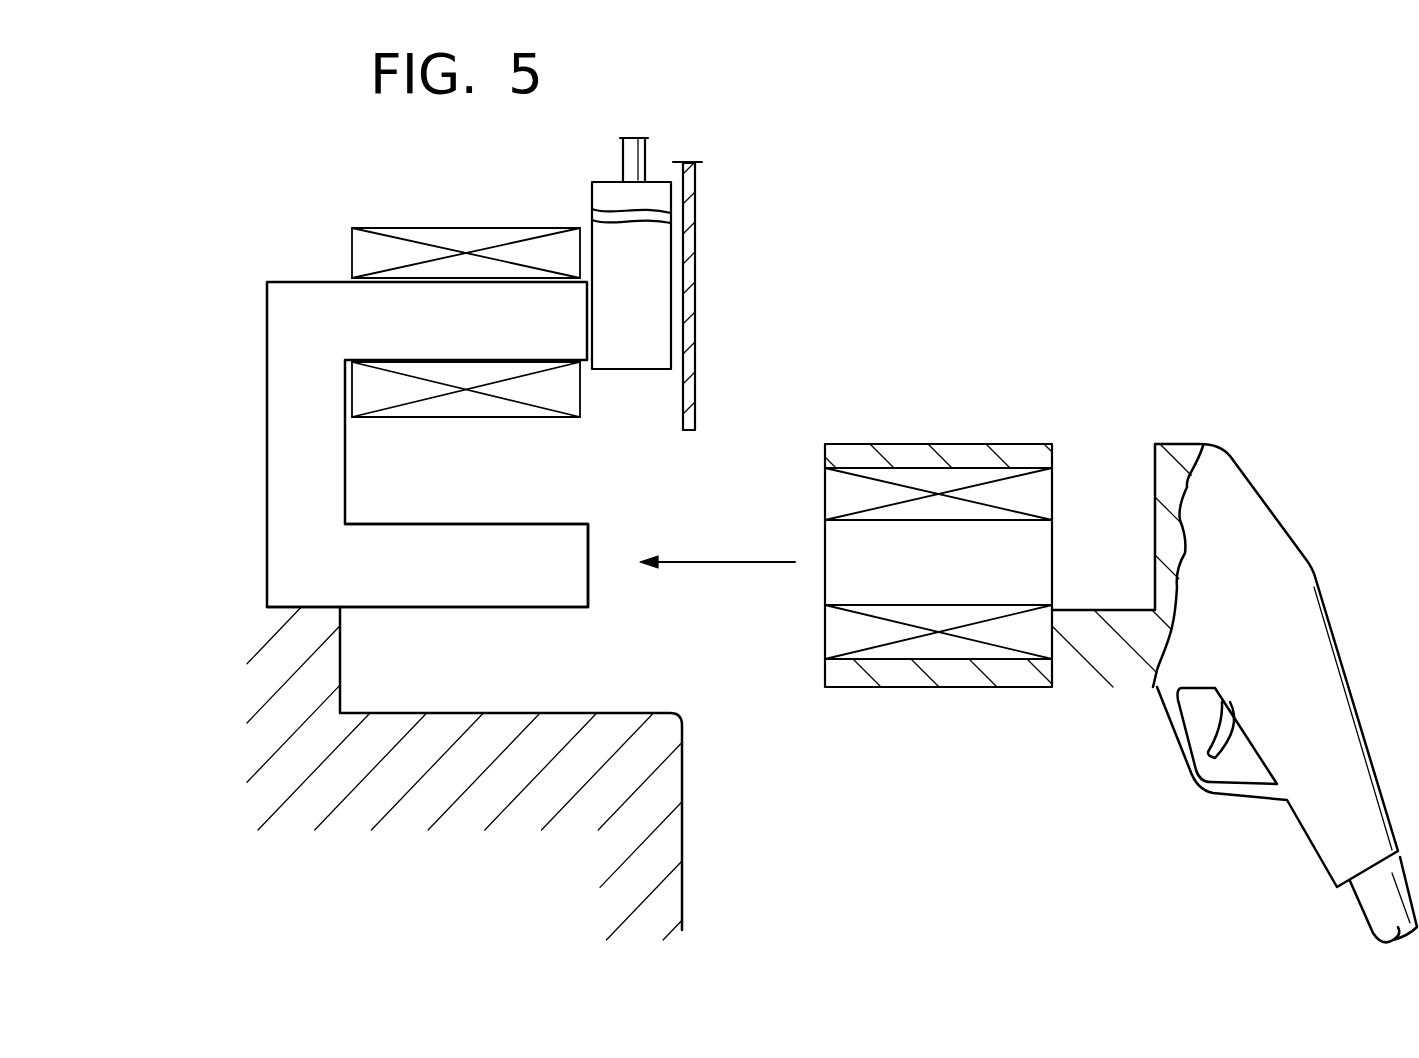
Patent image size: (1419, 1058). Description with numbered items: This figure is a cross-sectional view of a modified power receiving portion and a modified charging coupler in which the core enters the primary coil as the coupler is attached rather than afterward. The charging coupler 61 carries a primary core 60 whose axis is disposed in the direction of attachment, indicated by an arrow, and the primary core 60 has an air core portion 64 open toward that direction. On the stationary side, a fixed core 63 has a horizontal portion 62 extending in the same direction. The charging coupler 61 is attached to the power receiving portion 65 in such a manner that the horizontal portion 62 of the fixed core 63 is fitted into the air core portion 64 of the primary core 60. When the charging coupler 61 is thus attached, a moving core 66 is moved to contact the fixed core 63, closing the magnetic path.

The primary core 60 is at (806, 493).
The charging coupler 61 is at (1188, 430).
The horizontal portion 62 is at (547, 602).
The fixed core 63 is at (248, 408).
The air core portion 64 is at (967, 532).
The power receiving portion 65 is at (662, 444).
The moving core 66 is at (657, 286).